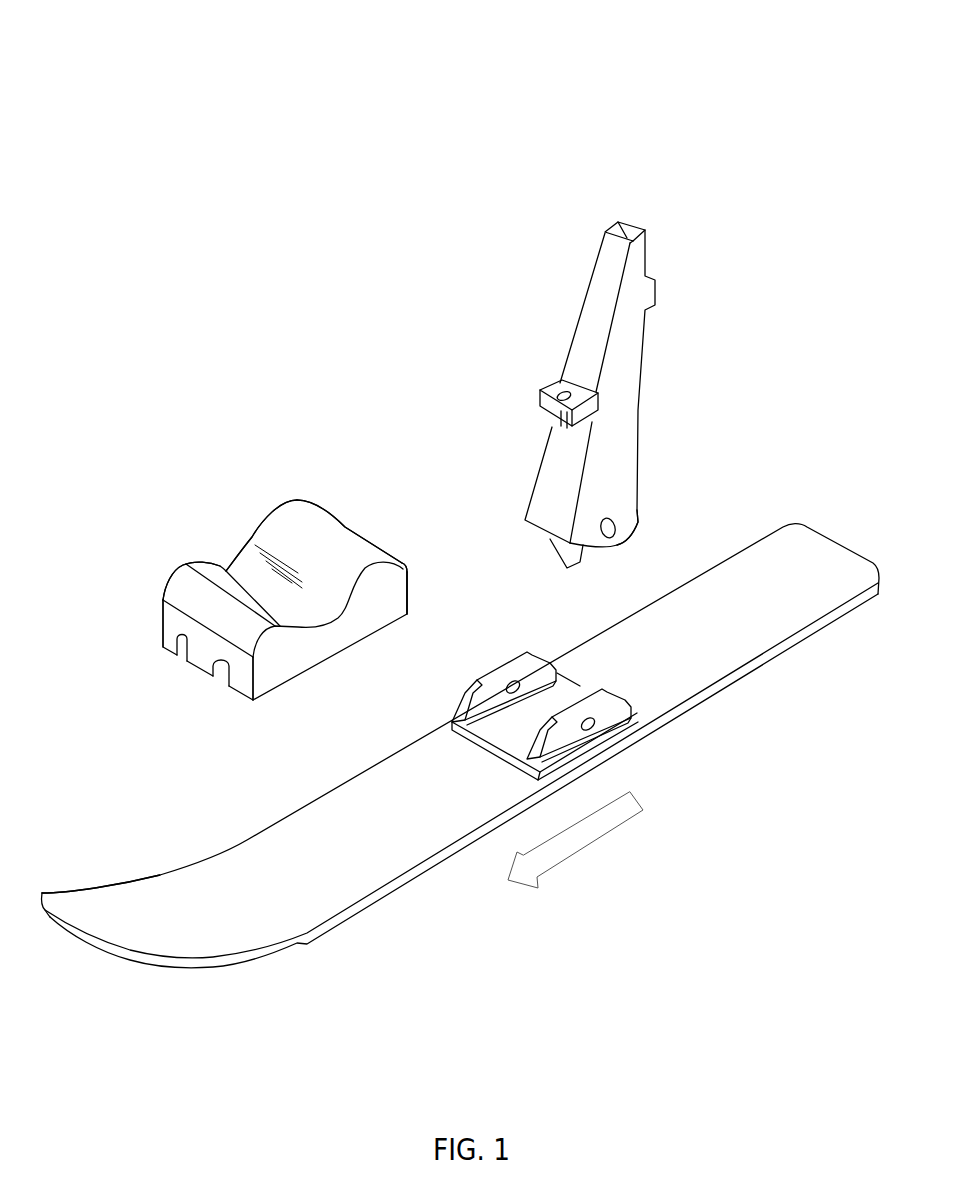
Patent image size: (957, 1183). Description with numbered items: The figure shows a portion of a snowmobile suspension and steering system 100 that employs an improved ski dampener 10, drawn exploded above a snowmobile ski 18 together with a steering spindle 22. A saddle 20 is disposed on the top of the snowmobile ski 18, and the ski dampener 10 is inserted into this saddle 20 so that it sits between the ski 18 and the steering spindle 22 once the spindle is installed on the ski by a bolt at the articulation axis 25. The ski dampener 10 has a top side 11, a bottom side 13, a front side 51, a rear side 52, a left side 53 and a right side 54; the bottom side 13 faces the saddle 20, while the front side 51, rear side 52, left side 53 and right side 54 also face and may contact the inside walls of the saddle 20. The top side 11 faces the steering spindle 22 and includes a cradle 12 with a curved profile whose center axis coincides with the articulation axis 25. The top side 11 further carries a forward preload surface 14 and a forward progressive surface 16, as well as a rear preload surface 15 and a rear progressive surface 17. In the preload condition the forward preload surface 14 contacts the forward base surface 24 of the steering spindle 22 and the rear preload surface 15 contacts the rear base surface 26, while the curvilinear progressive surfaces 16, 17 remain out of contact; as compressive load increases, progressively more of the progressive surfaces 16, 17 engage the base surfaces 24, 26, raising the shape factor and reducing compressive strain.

The ski binding assembly 100 is at (750, 66).
The ski dampener 10 is at (333, 637).
The top side 11 is at (334, 557).
The cradle 12 is at (260, 573).
The bottom side 13 is at (377, 638).
The forward preload surface 14 is at (220, 573).
The rear preload surface 15 is at (277, 532).
The forward progressive surface 16 is at (194, 600).
The rear progressive surface 17 is at (328, 521).
The snowmobile ski 18 is at (733, 682).
The saddle 20 is at (600, 692).
The steering spindle 22 is at (587, 302).
The forward base surface 24 is at (568, 545).
The articulation axis 25 is at (627, 542).
The rear base surface 26 is at (638, 530).
The front side 51 is at (212, 674).
The rear side 52 is at (405, 580).
The left side 53 is at (268, 665).
The right side 54 is at (165, 645).